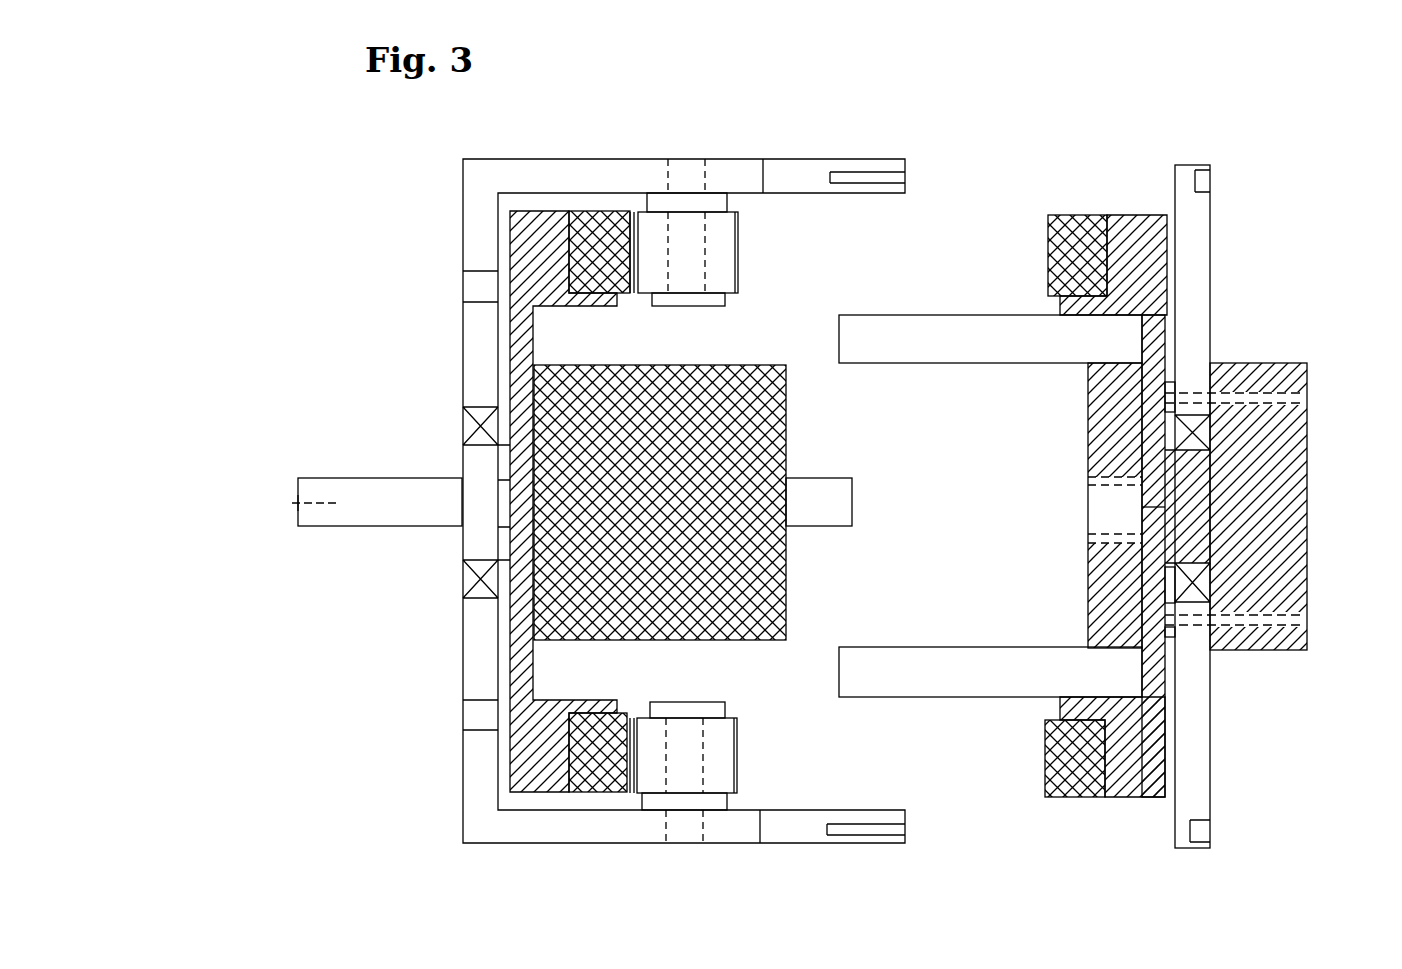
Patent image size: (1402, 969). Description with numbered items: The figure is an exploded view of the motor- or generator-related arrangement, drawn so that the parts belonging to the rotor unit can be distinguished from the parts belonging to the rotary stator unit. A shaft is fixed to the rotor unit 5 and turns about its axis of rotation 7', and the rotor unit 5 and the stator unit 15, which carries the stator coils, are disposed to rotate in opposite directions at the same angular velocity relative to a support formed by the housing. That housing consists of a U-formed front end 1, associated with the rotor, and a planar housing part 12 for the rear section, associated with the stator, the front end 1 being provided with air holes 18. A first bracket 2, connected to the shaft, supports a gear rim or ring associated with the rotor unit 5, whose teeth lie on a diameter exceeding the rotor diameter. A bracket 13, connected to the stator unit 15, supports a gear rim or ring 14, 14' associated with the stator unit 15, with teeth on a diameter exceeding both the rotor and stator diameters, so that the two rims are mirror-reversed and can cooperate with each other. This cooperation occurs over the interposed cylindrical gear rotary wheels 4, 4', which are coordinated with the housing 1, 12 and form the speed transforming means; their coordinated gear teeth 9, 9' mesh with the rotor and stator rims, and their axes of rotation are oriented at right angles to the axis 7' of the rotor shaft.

The front end of U-formed support or housing 1 is at (477, 636).
The first bracket 2 is at (521, 737).
The gear rotary wheel 4 is at (716, 249).
The gear rotary wheel 4' is at (688, 802).
The rotor unit 5 is at (707, 364).
The axis of rotation 7' is at (266, 494).
The gear teeth 9 is at (768, 252).
The gear teeth 9' is at (772, 755).
The planar housing part 12 is at (1218, 290).
The bracket 13 is at (1138, 726).
The gear rim or ring 14 is at (1107, 231).
The gear rim or ring 14' is at (1105, 774).
The stator unit 15 is at (978, 368).
The air hole 18 is at (440, 290).